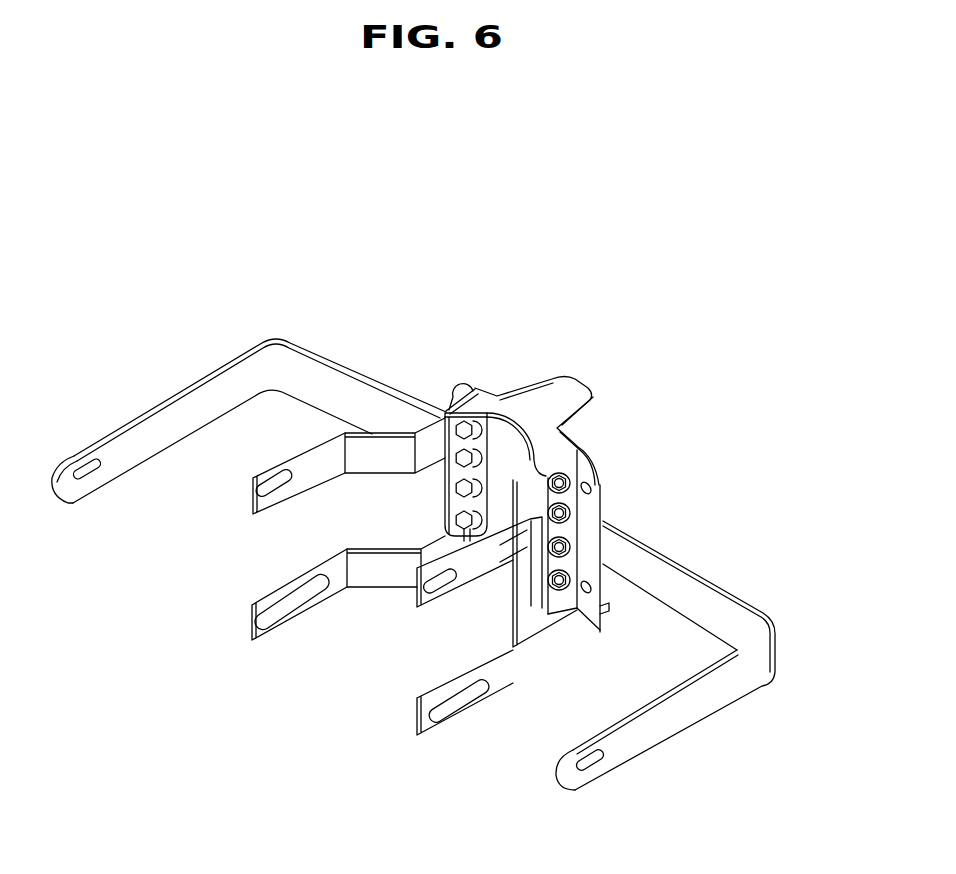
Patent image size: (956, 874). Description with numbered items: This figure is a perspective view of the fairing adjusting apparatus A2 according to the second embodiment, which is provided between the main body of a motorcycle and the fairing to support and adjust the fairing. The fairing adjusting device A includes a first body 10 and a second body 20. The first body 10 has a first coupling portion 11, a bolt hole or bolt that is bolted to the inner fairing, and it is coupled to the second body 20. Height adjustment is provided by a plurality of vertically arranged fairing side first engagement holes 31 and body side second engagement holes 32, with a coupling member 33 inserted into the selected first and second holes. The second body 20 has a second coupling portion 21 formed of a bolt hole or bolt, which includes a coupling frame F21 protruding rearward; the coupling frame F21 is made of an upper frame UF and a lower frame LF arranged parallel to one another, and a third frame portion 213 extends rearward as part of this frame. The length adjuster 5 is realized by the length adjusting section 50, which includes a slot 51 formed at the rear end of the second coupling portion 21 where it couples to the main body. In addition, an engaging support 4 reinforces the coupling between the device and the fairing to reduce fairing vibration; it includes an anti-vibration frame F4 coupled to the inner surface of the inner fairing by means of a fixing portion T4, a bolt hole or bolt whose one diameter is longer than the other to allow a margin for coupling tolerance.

The fairing adjusting apparatus A2 is at (125, 273).
The fairing adjusting device A is at (632, 451).
The anti-vibration frame F4 is at (249, 424).
The fixing portion T4 is at (88, 478).
The engaging support 4 is at (676, 624).
The length adjuster 5 is at (358, 636).
The length adjusting section 50 is at (358, 636).
The second coupling portion 21 is at (289, 556).
The slot 51 is at (270, 490).
The upper frame UF is at (368, 460).
The lower frame LF is at (386, 553).
The first body 10 is at (684, 528).
The first coupling portion 11 is at (589, 487).
The fairing side first engagement holes 31 is at (684, 531).
The body side second engagement holes 32 is at (571, 560).
The coupling member 33 is at (628, 531).
The second body 20 is at (497, 616).
The third frame portion 213 is at (466, 578).
The coupling frame F21 is at (500, 684).